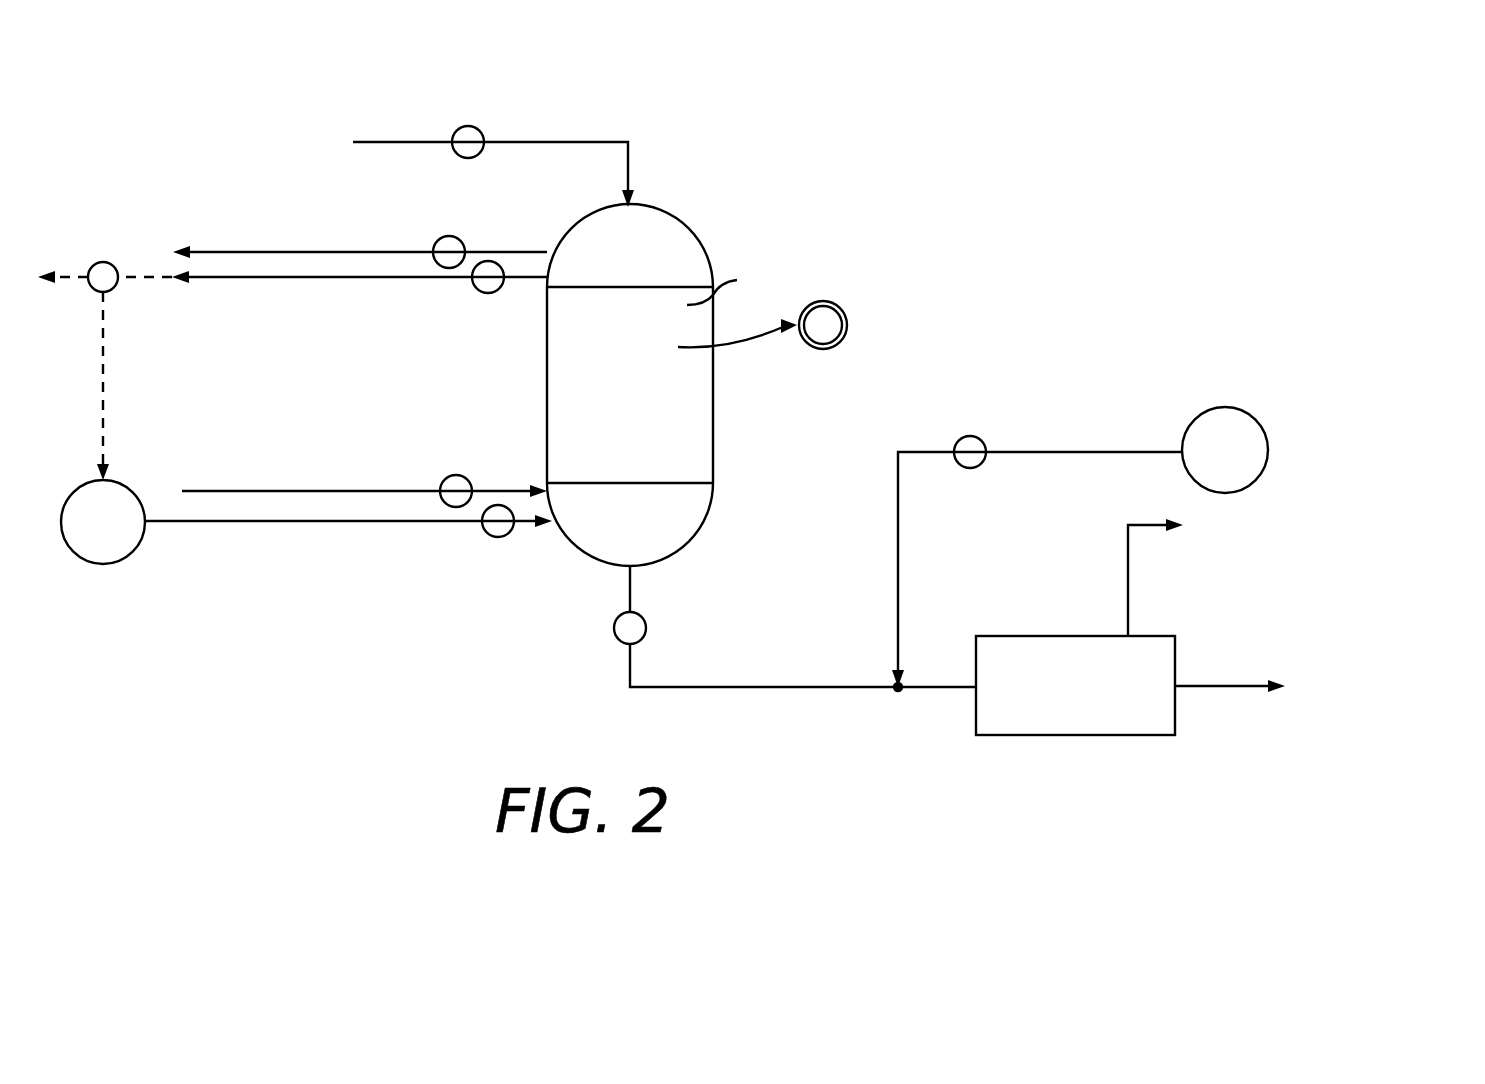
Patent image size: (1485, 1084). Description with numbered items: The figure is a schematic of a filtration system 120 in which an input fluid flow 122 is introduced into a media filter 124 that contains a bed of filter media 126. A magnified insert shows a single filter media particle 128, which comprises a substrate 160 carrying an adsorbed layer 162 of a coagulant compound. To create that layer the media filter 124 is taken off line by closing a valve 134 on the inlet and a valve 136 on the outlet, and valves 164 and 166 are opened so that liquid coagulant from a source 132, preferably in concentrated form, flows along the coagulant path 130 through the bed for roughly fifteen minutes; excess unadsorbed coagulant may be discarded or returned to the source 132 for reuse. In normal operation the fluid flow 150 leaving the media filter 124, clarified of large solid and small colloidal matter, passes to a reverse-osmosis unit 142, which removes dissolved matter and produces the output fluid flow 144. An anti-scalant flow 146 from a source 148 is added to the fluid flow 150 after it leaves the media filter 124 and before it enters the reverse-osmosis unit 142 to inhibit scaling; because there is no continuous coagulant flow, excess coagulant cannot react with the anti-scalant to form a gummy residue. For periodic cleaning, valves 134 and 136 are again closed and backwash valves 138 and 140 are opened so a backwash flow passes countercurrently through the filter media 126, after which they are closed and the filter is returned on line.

The system 120 is at (875, 219).
The input fluid flow 122 is at (428, 142).
The media filter 124 is at (713, 420).
The filter media 126 is at (732, 281).
The filter media particle 128 is at (800, 320).
The coagulant in line 130 is at (428, 525).
The source 132 is at (115, 562).
The valve 134 is at (480, 129).
The valve 136 is at (646, 628).
The backwash valve 138 is at (456, 475).
The backwash valve 140 is at (458, 238).
The reverse-osmosis unit 142 is at (1082, 736).
The output fluid flow 144 is at (1207, 688).
The anti-scalant flow 146 is at (898, 553).
The source 148 is at (1257, 423).
The fluid flow 150 is at (733, 688).
The substrate 160 is at (825, 327).
The adsorbed layer 162 is at (848, 325).
The valve 164 is at (497, 537).
The valve 166 is at (485, 293).